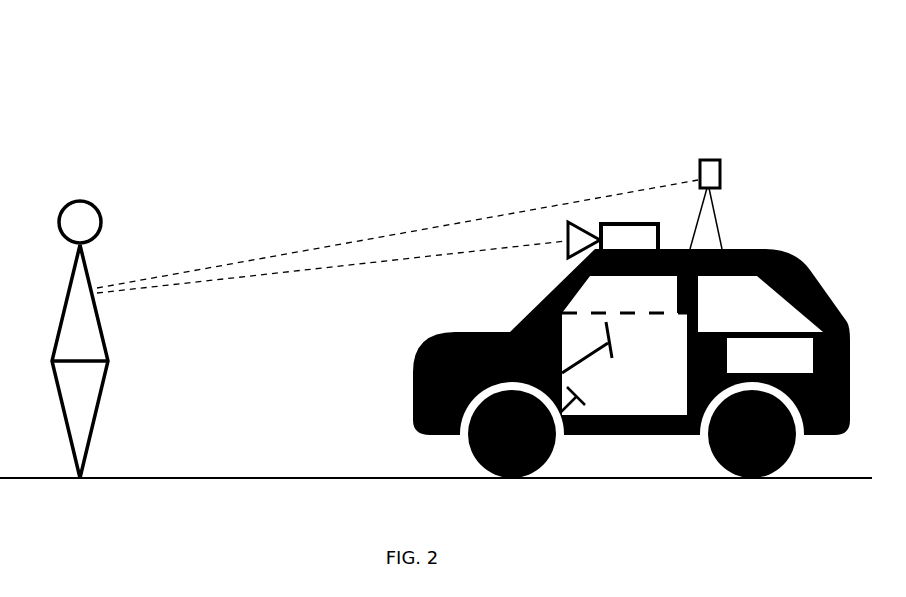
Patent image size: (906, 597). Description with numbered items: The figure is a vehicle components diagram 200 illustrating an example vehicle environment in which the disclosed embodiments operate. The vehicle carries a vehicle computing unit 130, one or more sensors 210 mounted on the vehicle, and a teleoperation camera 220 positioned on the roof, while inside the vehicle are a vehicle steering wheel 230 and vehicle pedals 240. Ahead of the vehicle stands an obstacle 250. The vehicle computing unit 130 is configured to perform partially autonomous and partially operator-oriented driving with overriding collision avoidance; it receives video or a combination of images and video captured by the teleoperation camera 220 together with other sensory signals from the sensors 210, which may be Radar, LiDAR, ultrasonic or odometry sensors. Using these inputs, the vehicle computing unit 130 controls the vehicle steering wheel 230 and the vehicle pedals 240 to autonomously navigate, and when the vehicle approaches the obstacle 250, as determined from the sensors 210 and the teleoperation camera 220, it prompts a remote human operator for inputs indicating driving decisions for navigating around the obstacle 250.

The vehicle computing unit 130 is at (757, 366).
The vehicle components diagram 200 is at (735, 65).
The sensors 210 is at (728, 158).
The teleoperation camera 220 is at (609, 210).
The vehicle steering wheel 230 is at (618, 348).
The vehicle pedals 240 is at (593, 397).
The obstacle 250 is at (112, 210).